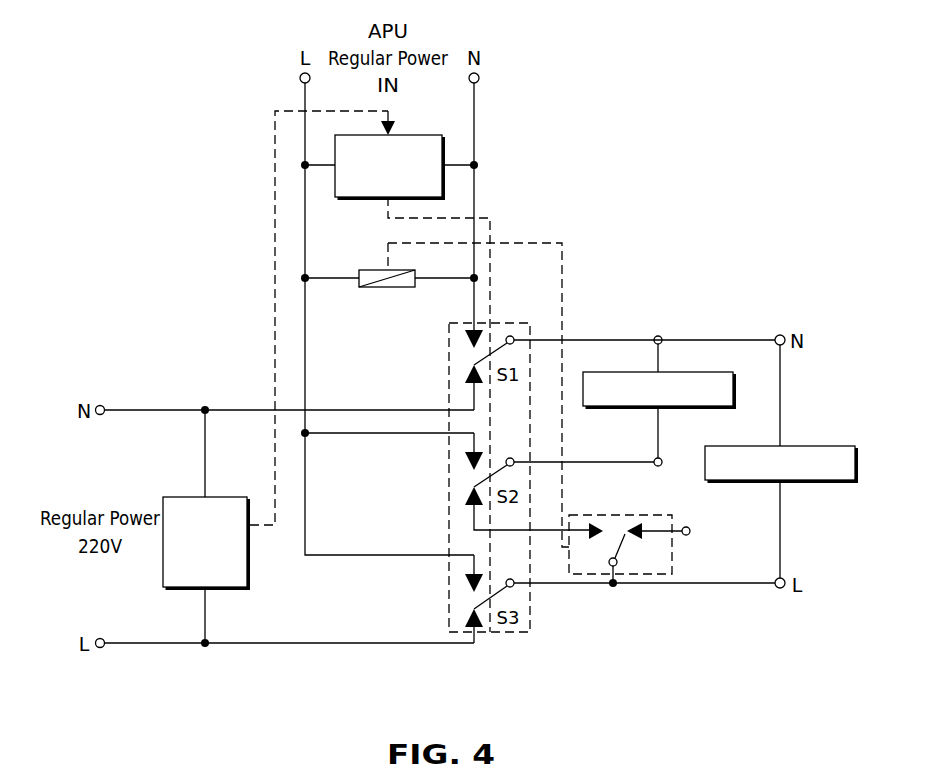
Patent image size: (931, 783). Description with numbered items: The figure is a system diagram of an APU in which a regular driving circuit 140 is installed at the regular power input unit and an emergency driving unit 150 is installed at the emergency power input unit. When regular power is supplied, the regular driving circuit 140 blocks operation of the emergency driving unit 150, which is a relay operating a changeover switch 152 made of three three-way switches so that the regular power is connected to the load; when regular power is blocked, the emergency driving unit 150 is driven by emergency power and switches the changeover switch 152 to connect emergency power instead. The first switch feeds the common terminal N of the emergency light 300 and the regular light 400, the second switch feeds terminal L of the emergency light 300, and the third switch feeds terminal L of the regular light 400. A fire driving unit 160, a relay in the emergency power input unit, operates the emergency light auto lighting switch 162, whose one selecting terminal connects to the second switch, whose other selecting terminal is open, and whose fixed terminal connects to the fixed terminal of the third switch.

The regular driving circuit 140 is at (222, 497).
The emergency driving unit 150 is at (404, 135).
The changeover switch 152 is at (507, 323).
The fire driving unit 160 is at (398, 270).
The emergency light auto lighting switch 162 is at (622, 515).
The emergency light 300 is at (672, 372).
The regular light 400 is at (796, 446).